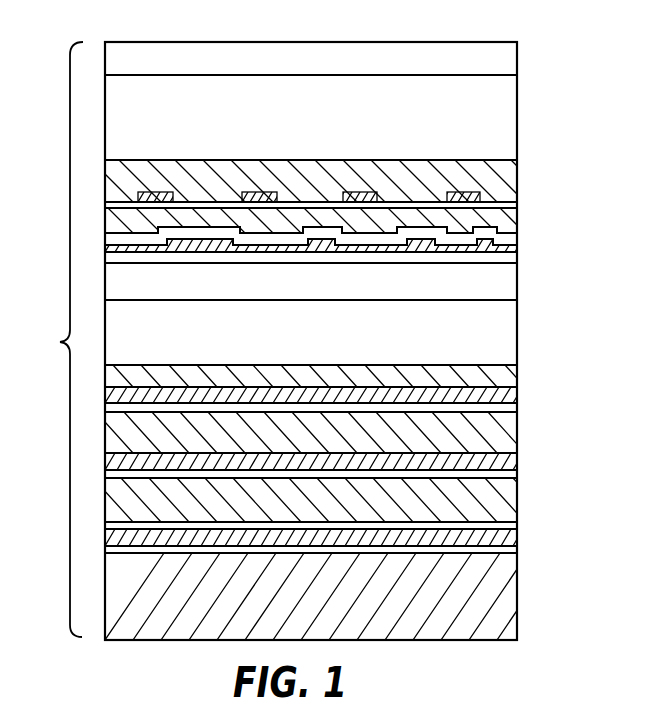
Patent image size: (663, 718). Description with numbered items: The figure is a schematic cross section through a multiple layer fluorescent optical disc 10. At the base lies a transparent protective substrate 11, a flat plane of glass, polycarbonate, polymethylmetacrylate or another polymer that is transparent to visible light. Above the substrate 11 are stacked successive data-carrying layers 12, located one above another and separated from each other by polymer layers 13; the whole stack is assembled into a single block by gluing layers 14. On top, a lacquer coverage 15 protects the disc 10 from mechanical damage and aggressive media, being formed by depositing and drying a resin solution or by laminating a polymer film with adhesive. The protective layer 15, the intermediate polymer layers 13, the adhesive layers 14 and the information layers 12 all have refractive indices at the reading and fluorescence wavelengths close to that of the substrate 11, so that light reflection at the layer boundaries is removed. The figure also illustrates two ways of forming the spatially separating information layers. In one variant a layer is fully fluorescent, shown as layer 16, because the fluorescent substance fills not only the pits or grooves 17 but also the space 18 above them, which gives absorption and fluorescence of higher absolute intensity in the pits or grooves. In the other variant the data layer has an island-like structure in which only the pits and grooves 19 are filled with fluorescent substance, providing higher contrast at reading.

The fluorescent optical disc 10 is at (53, 355).
The transparent protective substrate 11 is at (487, 611).
The data-carrying layer 12 is at (502, 398).
The polymer layer 13 is at (500, 207).
The gluing layer 14 is at (483, 263).
The lacquer coverage 15 is at (471, 52).
The fully fluorescent layer 16 is at (497, 257).
The pits or grooves 17 is at (497, 218).
The space above the pits or grooves 18 is at (137, 252).
The pits and grooves 19 is at (474, 190).